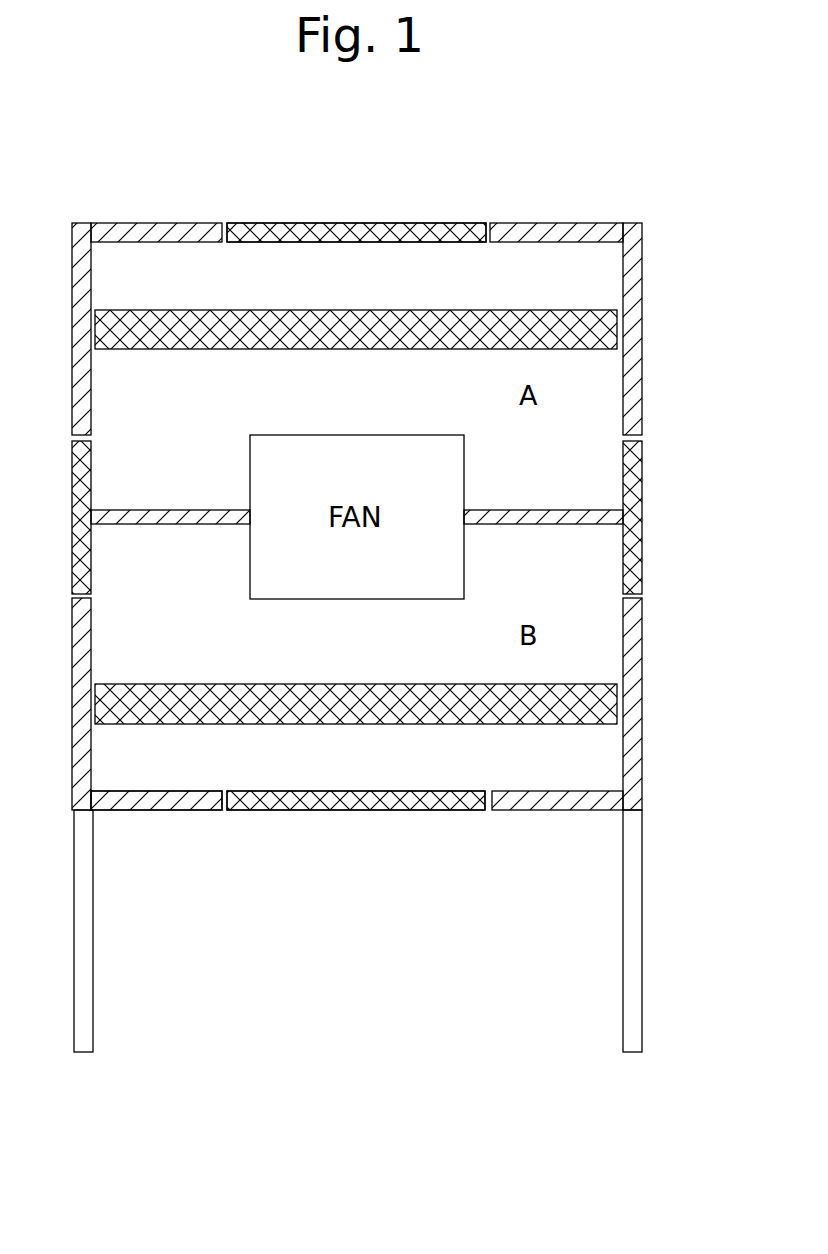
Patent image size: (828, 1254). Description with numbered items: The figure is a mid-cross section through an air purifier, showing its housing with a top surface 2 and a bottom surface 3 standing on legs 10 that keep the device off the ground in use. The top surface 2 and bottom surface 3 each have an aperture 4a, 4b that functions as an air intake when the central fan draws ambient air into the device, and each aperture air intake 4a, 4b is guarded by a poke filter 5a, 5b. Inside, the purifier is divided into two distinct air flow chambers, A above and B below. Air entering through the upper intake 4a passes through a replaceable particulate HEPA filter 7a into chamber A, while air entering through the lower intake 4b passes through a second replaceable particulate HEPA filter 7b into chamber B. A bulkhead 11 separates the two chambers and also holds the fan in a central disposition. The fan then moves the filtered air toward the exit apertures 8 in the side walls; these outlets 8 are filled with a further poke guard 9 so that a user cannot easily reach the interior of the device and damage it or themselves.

The top surface 2 is at (128, 222).
The bottom surface 3 is at (170, 812).
The aperture 4a is at (486, 218).
The aperture 4b is at (485, 815).
The poke filter 5a is at (450, 242).
The poke filter 5b is at (462, 790).
The particulate HEPA filter 7a is at (610, 324).
The particulate HEPA filter 7b is at (610, 693).
The exit apertures 8 is at (63, 441).
The poke guard 9 is at (91, 462).
The legs 10 is at (93, 972).
The bulkhead 11 is at (526, 510).